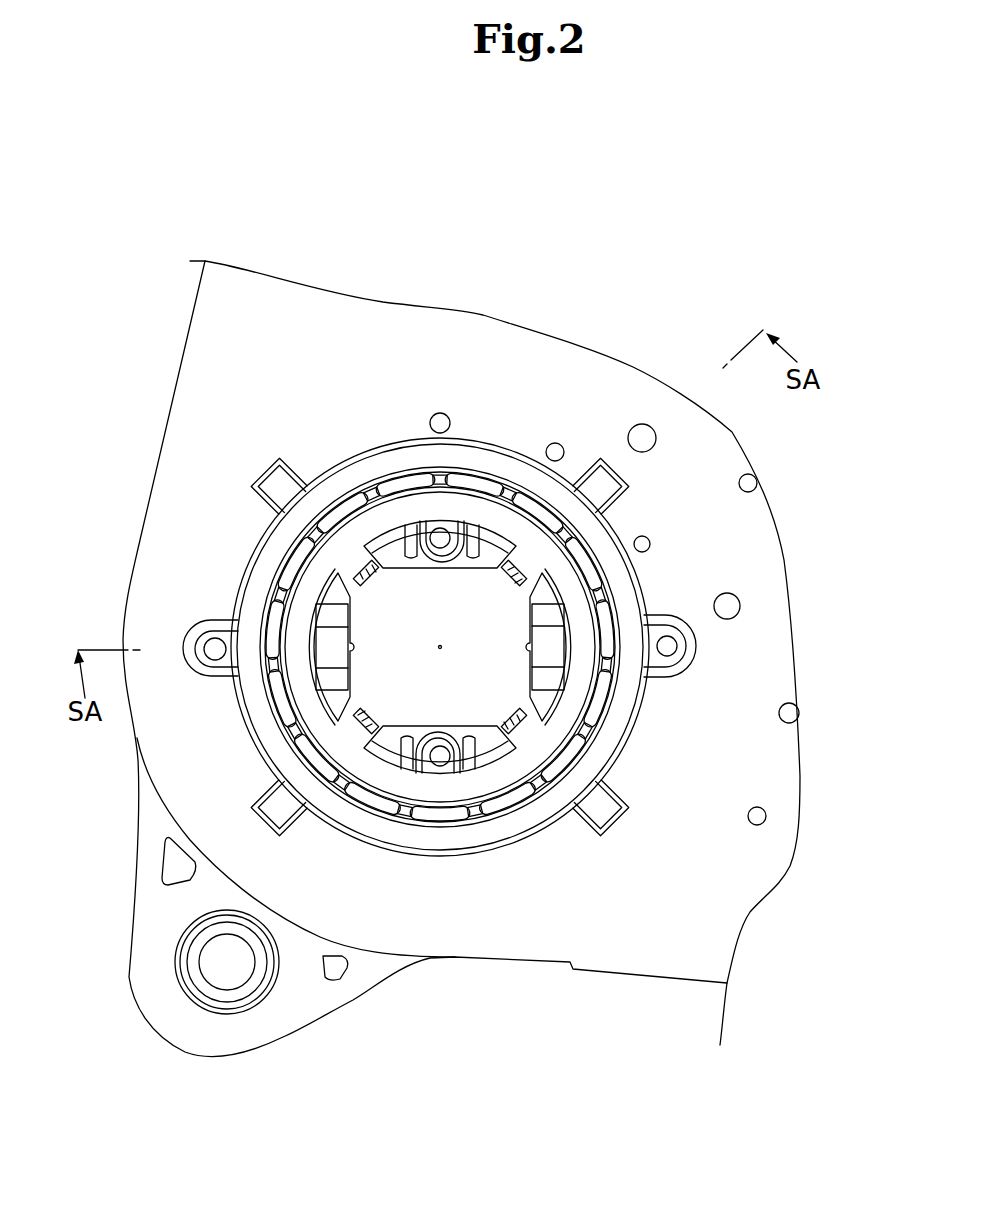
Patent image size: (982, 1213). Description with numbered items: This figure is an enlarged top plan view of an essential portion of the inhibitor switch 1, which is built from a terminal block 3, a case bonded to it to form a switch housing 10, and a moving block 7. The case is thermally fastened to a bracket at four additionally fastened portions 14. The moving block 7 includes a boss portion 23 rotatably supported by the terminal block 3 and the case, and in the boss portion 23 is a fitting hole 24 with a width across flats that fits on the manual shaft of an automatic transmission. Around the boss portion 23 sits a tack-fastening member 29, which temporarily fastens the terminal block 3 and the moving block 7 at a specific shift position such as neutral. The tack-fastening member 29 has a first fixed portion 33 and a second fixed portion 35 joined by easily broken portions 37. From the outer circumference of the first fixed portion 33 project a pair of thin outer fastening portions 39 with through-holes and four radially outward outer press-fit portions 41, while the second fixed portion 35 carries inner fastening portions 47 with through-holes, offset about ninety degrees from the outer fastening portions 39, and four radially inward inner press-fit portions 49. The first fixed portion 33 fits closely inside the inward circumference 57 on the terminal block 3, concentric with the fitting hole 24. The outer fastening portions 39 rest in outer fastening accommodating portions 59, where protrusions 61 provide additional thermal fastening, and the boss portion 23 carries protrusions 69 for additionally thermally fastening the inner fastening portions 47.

The inhibitor switch 1 is at (727, 272).
The terminal block 3 is at (213, 362).
The moving block 7 is at (573, 678).
The switch housing 10 is at (178, 378).
The additionally fastened portions 14 is at (226, 970).
The boss portion 23 is at (556, 591).
The fitting hole 24 is at (383, 647).
The tack-fastening member 29 is at (413, 455).
The first fixed portion 33 is at (385, 468).
The second fixed portion 35 is at (373, 487).
The easily broken portions 37 is at (478, 497).
The outer fastening portions 39 is at (197, 619).
The outer press-fit portions 41 is at (274, 486).
The inner fastening portions 47 is at (437, 735).
The inner press-fit portions 49 is at (363, 588).
The inward circumference 57 is at (472, 480).
The outer fastening accommodating portions 59 is at (215, 652).
The protrusions 61 is at (698, 634).
The protrusions 69 is at (440, 537).